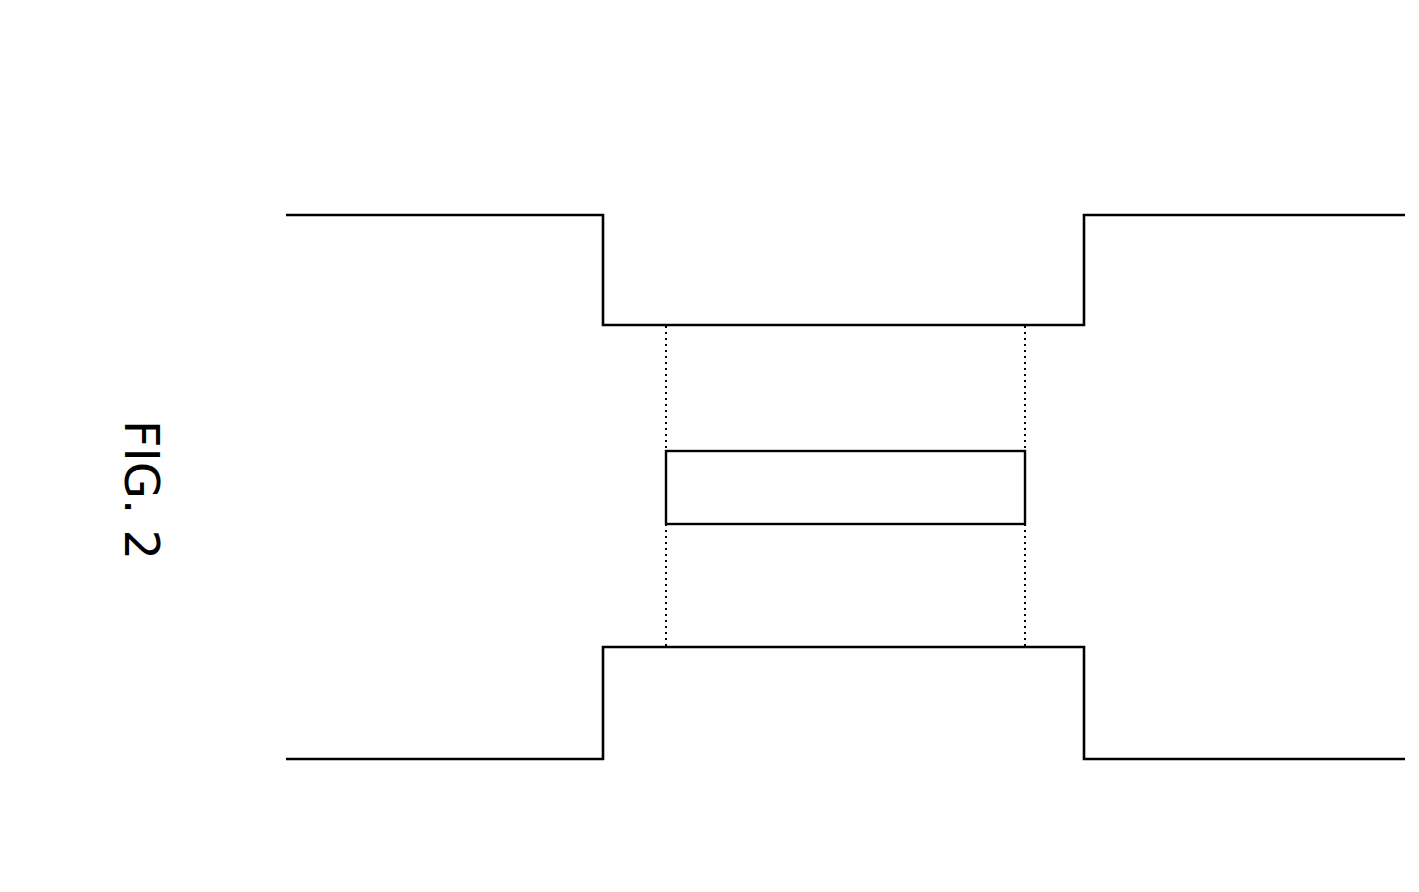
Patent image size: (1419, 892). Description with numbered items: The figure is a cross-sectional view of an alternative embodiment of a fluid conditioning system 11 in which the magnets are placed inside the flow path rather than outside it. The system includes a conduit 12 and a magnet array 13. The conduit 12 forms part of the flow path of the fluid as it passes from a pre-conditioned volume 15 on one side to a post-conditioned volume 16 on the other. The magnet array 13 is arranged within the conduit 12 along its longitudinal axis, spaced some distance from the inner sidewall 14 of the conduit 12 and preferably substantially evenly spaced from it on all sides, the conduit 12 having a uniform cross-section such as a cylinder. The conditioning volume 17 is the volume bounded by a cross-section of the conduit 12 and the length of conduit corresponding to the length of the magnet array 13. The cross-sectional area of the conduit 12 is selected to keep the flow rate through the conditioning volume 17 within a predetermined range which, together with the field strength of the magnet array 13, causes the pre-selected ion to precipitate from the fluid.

The fluid conditioning system 11 is at (1003, 178).
The conduit 12 is at (897, 325).
The magnet array 13 is at (849, 502).
The inner sidewall 14 is at (690, 328).
The pre-conditioned volume 15 is at (461, 495).
The post-conditioned volume 16 is at (1294, 495).
The conditioning volume 17 is at (864, 613).